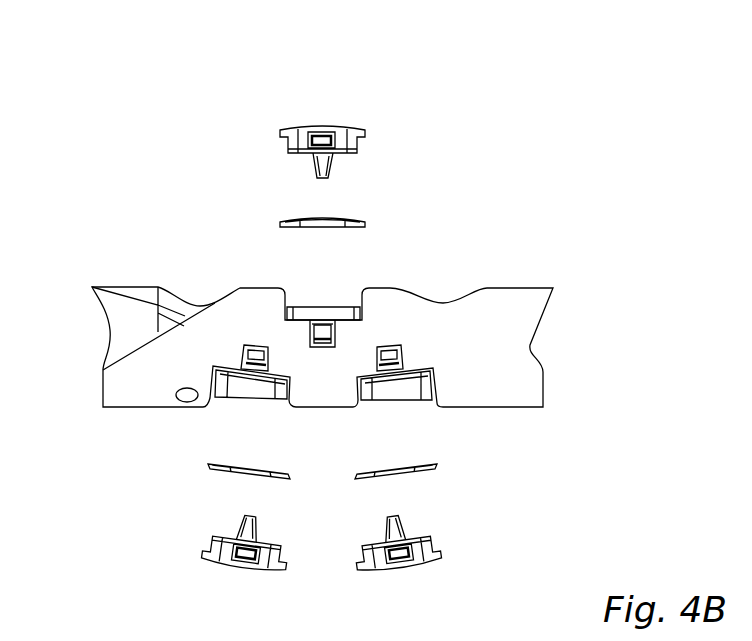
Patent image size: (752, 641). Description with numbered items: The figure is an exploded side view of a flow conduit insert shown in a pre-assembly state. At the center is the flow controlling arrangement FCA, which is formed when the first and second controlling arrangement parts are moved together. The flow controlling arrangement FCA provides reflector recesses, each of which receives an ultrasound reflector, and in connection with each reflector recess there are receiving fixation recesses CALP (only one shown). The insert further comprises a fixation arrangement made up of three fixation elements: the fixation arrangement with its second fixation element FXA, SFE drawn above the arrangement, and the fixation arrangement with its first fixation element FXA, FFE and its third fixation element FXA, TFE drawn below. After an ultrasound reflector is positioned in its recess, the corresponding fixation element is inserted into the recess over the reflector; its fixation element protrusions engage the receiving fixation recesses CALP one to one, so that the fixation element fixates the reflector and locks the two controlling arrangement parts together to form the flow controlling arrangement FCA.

The flow controlling arrangement FCA is at (518, 287).
The receiving fixation recess CALP is at (336, 341).
The fixture assembly, side fixture element FXA, SFE is at (323, 124).
The fixture assembly, front fixture element FXA, FFE is at (238, 560).
The fixture assembly, top fixture element FXA, TFE is at (400, 577).